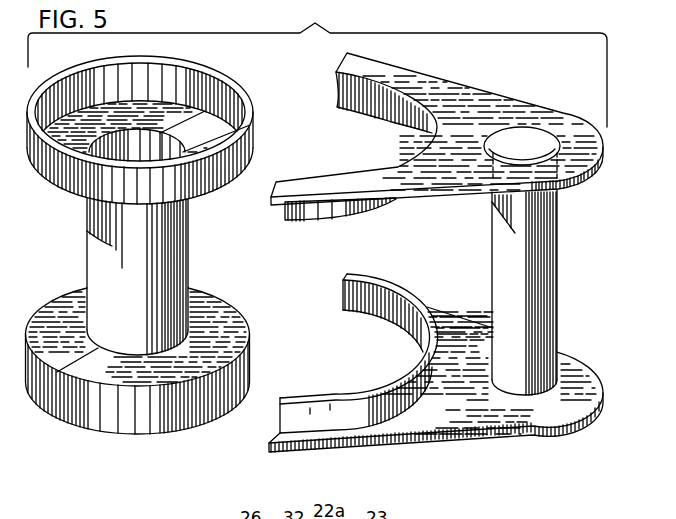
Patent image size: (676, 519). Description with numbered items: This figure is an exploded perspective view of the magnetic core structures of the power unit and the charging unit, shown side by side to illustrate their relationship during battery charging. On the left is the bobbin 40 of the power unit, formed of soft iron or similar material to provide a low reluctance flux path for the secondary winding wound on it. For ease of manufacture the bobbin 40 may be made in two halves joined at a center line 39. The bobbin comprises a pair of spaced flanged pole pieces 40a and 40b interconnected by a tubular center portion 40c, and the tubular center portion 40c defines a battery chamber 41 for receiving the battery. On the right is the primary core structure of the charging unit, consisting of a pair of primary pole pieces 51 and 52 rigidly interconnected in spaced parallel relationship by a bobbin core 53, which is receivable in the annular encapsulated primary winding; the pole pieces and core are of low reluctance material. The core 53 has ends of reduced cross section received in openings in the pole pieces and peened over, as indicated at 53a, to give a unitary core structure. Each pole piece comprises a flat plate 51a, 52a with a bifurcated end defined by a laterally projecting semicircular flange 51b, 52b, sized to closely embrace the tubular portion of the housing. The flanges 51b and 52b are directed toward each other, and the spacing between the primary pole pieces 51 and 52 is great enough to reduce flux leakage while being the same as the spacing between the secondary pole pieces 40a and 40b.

The center line 39 is at (196, 112).
The bobbin 40 is at (86, 252).
The flanged pole piece 40a is at (172, 60).
The flanged pole piece 40b is at (147, 422).
The tubular center portion 40c is at (190, 239).
The battery chamber 41 is at (143, 140).
The primary pole piece 51 is at (523, 108).
The flat plate 51a is at (465, 88).
The semicircular flange 51b is at (316, 212).
The primary pole piece 52 is at (523, 430).
The flat plate 52a is at (458, 432).
The semicircular flange 52b is at (342, 408).
The bobbin core 53 is at (552, 250).
The peened-over end 53a is at (545, 148).